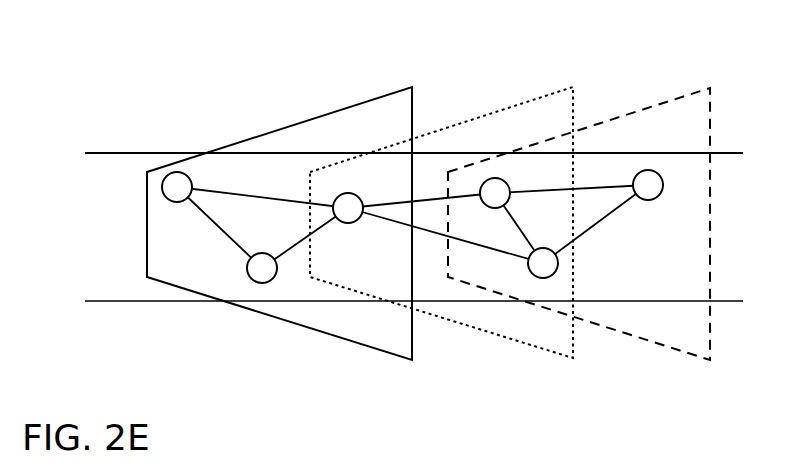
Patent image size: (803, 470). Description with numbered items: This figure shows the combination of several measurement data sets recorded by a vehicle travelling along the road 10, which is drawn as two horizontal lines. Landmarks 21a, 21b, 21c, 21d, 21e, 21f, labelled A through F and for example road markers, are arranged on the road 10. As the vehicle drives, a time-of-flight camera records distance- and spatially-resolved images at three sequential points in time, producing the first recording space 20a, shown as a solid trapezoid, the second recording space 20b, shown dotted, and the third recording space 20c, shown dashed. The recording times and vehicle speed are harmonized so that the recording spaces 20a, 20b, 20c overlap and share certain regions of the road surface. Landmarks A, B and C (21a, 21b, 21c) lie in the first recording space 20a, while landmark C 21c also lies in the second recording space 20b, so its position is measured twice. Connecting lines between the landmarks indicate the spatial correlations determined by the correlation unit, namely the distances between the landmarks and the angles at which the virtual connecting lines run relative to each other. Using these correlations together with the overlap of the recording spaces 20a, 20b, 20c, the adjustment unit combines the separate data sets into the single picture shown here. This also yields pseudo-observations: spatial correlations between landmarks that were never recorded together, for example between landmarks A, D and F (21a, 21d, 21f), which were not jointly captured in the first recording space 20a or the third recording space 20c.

The road 10 is at (116, 284).
The first recording space 20a is at (298, 112).
The second recording space 20b is at (469, 110).
The third recording space 20c is at (617, 106).
The landmark A 21a is at (166, 158).
The landmark B 21b is at (248, 298).
The landmark C 21c is at (347, 180).
The landmark D 21d is at (495, 165).
The landmark E 21e is at (530, 292).
The landmark F 21f is at (648, 157).